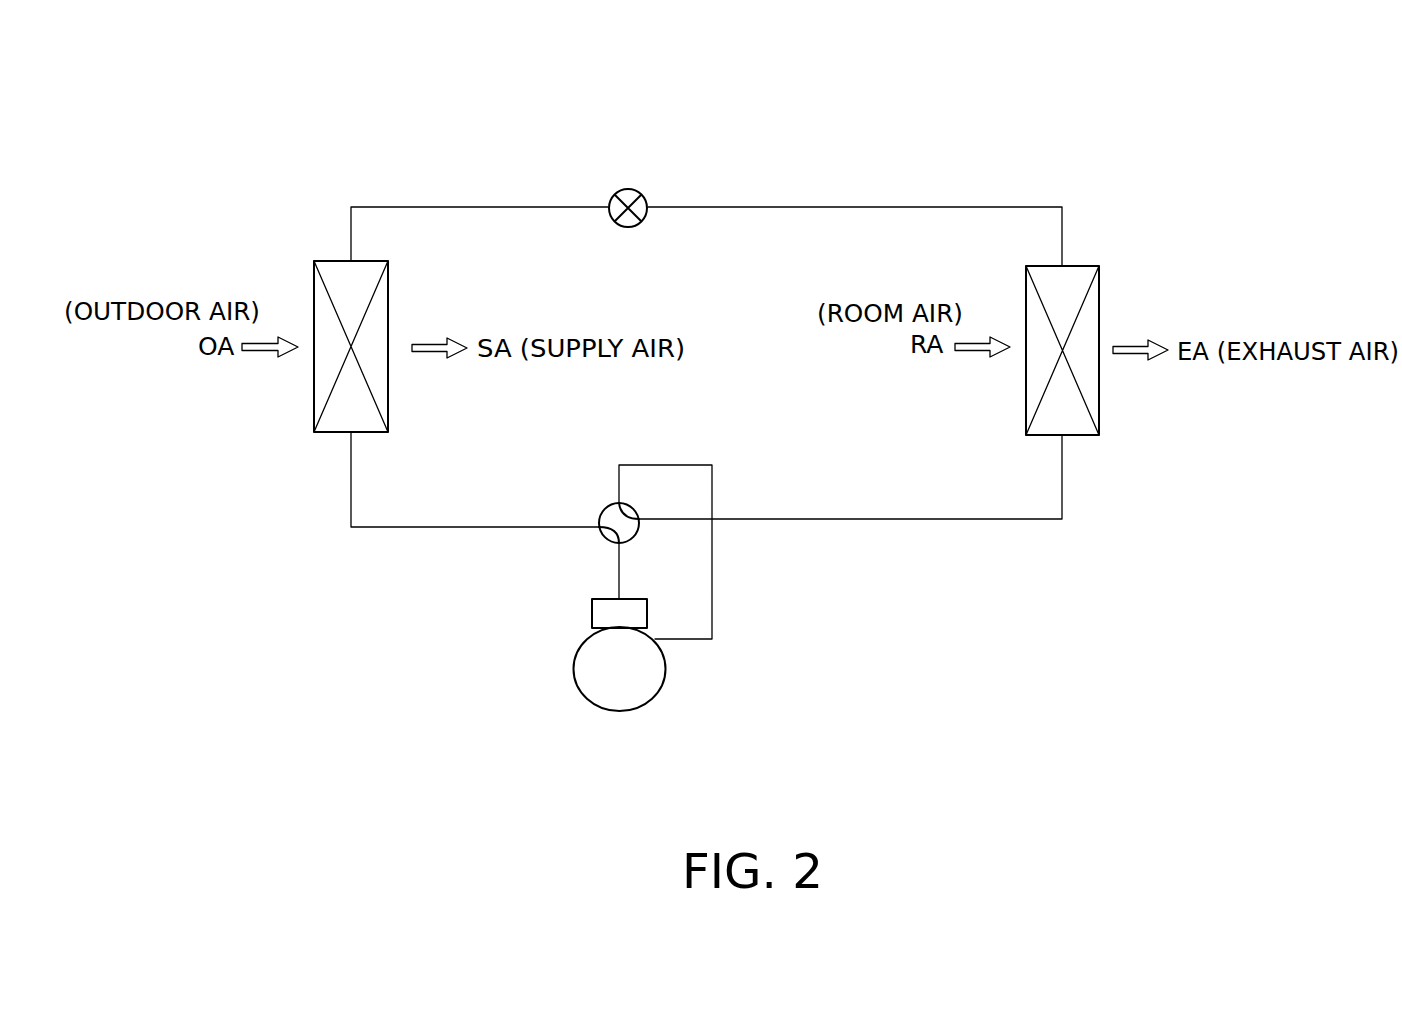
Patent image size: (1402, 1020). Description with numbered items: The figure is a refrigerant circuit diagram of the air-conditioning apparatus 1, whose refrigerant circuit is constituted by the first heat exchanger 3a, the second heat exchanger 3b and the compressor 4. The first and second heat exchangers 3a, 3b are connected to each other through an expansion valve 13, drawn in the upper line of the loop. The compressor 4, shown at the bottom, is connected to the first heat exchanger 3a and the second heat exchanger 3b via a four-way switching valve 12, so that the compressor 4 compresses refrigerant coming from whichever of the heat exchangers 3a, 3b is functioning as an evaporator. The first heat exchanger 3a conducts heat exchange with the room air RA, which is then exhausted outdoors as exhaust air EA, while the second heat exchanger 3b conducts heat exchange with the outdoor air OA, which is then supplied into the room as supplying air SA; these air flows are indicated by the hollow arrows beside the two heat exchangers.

The air-conditioning apparatus 1 is at (255, 124).
The first heat exchanger 3a is at (1099, 282).
The second heat exchanger 3b is at (318, 278).
The compressor 4 is at (648, 688).
The four-way switching valve 12 is at (603, 538).
The expansion valve 13 is at (632, 190).